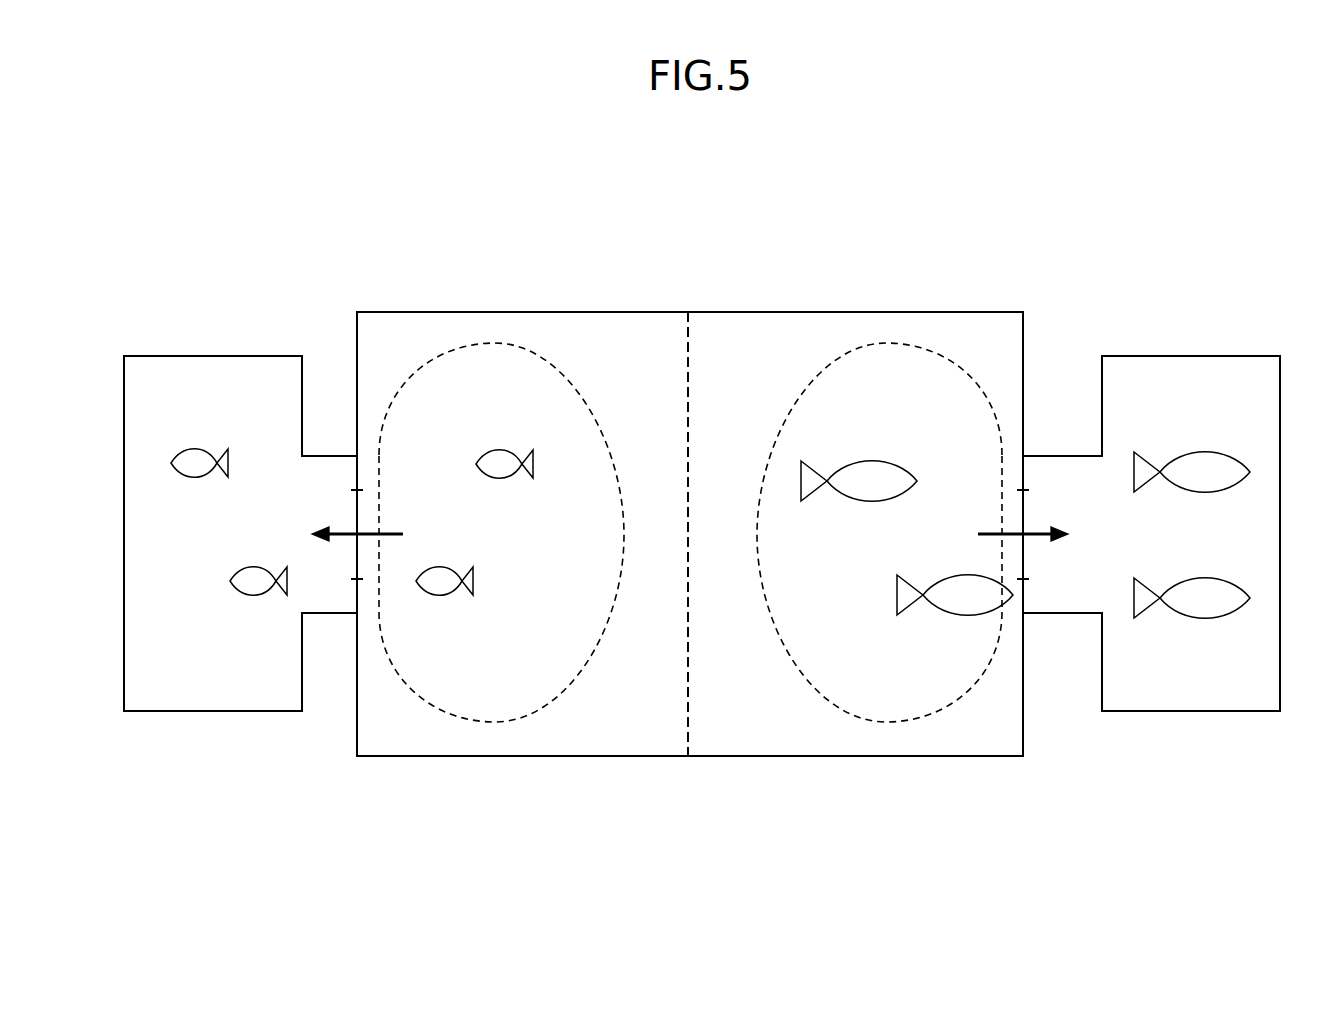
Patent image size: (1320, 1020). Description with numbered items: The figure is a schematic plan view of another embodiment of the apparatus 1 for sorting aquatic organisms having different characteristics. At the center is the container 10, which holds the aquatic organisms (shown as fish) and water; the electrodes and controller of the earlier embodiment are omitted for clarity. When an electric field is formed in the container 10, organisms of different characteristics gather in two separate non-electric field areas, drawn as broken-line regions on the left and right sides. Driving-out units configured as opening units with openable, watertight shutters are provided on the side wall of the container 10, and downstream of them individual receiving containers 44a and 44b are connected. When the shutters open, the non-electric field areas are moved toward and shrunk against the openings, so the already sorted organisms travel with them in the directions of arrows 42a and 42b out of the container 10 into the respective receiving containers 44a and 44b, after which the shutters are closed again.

The apparatus 1 is at (702, 490).
The container 10 is at (402, 312).
The arrow 42a is at (340, 538).
The arrow 42b is at (1040, 538).
The receiving container 44a is at (212, 356).
The receiving container 44b is at (1168, 356).